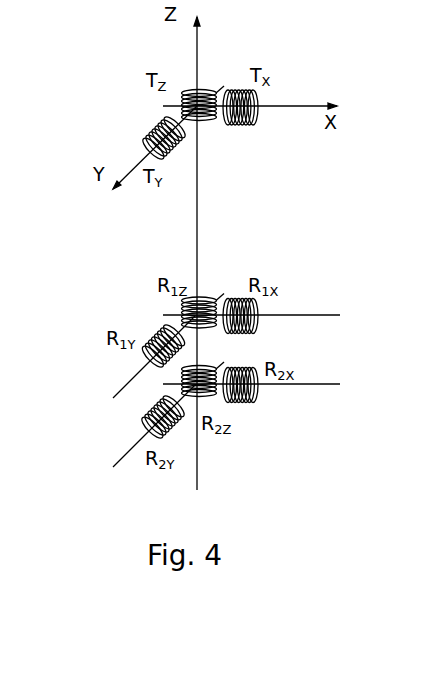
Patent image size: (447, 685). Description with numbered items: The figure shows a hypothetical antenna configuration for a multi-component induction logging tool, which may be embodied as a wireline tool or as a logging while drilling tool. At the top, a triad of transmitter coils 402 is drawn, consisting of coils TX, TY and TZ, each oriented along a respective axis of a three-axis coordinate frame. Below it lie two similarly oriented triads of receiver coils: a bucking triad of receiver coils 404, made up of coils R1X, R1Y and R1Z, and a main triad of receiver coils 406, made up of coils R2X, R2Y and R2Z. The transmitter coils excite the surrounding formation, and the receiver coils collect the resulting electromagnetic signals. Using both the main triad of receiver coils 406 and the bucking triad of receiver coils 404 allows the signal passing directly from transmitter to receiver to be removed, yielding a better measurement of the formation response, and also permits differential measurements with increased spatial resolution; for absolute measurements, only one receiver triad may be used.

The triad of transmitter coils 402 is at (157, 103).
The bucking triad of receiver coils 404 is at (153, 307).
The main triad of receiver coils 406 is at (128, 405).